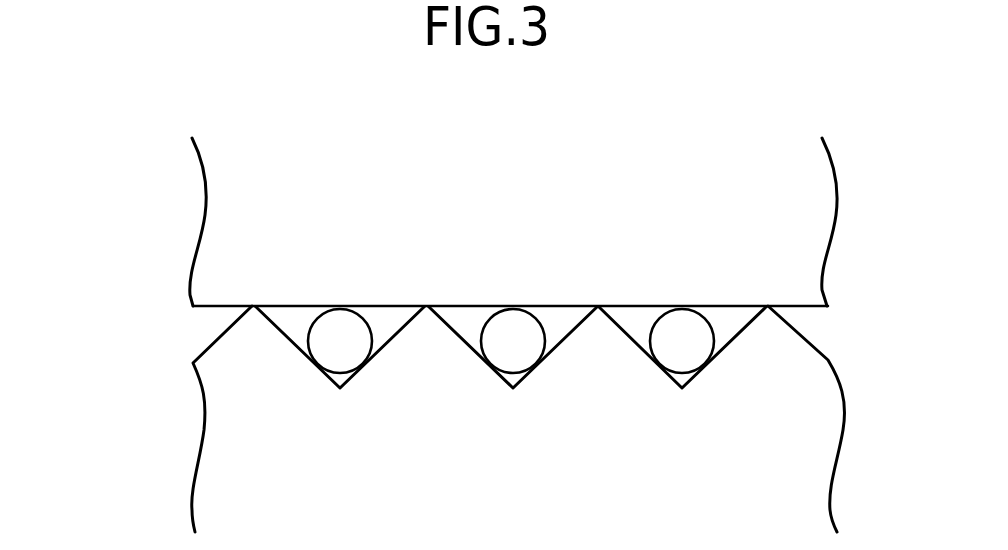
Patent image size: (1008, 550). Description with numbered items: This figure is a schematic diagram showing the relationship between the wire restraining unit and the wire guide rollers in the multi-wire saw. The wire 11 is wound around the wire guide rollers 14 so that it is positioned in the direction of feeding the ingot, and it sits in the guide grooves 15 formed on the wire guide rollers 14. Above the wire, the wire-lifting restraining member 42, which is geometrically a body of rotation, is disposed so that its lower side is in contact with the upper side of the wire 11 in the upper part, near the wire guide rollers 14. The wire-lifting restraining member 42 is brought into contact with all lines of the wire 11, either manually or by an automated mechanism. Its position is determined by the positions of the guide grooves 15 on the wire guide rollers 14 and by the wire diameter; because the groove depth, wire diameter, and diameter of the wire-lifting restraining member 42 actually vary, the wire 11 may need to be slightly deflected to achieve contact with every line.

The wire-lifting restraining member 42 is at (815, 219).
The wire guide roller 14 is at (212, 473).
The guide groove 15 is at (277, 322).
The wire 11 is at (506, 320).